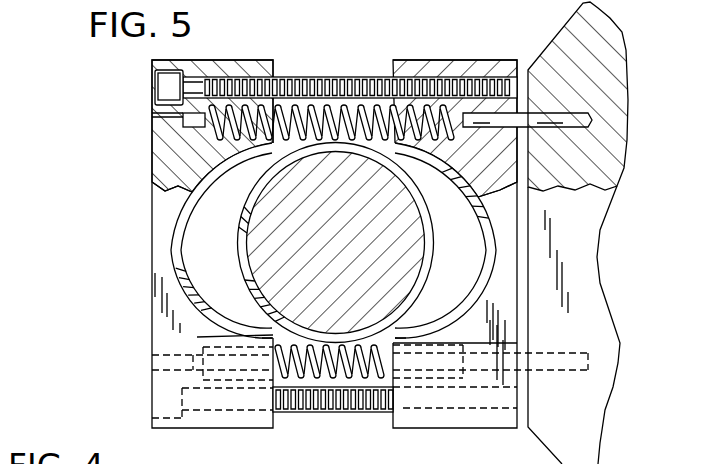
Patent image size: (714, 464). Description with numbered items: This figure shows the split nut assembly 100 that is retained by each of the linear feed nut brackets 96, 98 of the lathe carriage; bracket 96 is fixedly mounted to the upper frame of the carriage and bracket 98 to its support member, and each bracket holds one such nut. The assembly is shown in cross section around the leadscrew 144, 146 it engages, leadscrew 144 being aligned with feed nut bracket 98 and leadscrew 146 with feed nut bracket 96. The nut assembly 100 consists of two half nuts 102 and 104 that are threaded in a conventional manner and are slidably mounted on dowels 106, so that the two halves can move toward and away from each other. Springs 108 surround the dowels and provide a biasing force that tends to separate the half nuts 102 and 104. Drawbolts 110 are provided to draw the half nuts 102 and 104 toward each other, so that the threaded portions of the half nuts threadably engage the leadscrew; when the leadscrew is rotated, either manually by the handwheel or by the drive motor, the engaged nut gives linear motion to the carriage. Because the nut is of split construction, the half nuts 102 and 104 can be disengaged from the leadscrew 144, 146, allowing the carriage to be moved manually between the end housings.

The linear feed nut bracket 96 is at (261, 244).
The linear feed nut bracket 98 is at (127, 284).
The split nut assembly 100 is at (148, 325).
The half nut 102 is at (473, 430).
The half nut 104 is at (213, 430).
The dowel 106 is at (503, 117).
The spring 108 is at (301, 100).
The drawbolt 110 is at (163, 90).
The leadscrew 144 is at (239, 243).
The leadscrew 146 is at (242, 248).